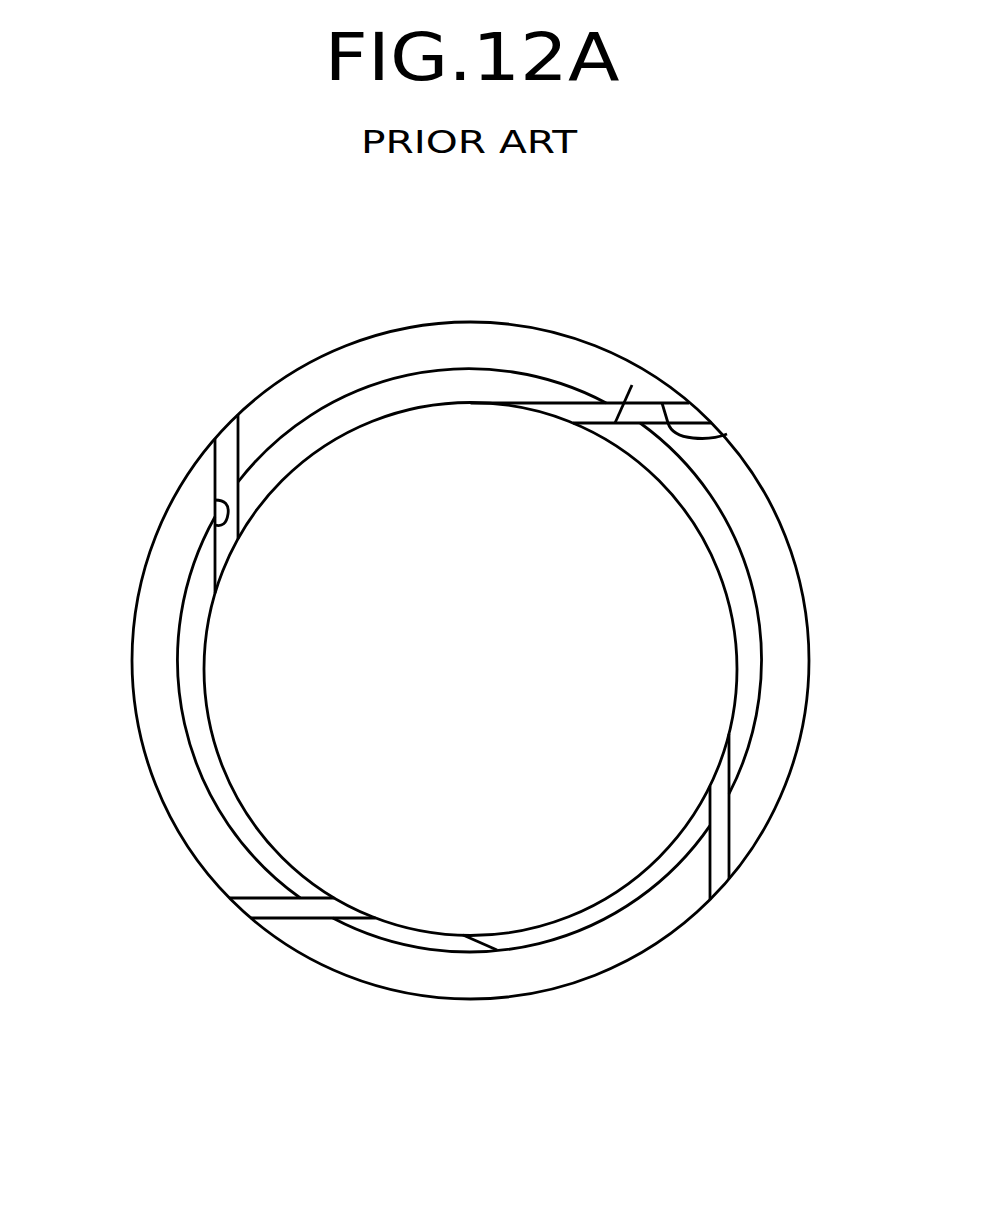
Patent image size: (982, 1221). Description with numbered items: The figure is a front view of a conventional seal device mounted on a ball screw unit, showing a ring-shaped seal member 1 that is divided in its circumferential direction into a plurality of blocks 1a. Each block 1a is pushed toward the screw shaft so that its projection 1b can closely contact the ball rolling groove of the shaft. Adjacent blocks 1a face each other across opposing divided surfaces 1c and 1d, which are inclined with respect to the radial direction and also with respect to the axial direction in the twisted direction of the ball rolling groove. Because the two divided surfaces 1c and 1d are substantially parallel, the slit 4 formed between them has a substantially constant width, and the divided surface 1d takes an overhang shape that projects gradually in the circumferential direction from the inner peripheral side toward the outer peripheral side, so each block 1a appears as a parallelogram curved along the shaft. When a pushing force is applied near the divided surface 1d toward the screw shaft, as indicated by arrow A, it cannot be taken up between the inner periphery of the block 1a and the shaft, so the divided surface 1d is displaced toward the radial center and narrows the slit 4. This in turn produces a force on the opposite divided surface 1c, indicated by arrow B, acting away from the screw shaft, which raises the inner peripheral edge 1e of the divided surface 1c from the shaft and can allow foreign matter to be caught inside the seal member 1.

The ring-shaped seal member 1 is at (783, 302).
The block 1a is at (433, 352).
The projection 1b is at (342, 424).
The divided surface 1c is at (220, 430).
The divided surface 1d is at (215, 500).
The inner peripheral edge 1e is at (240, 538).
The slit 4 is at (222, 468).
The arrow A is at (608, 333).
The arrow B is at (282, 422).